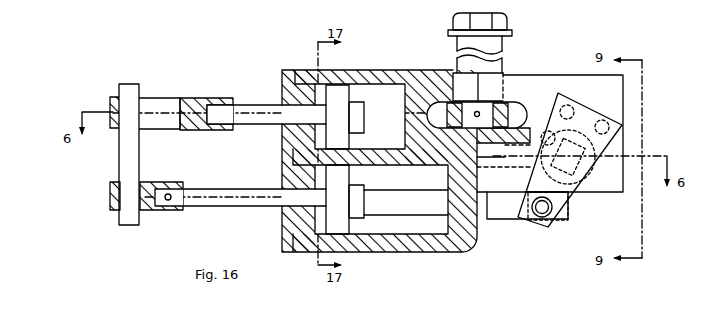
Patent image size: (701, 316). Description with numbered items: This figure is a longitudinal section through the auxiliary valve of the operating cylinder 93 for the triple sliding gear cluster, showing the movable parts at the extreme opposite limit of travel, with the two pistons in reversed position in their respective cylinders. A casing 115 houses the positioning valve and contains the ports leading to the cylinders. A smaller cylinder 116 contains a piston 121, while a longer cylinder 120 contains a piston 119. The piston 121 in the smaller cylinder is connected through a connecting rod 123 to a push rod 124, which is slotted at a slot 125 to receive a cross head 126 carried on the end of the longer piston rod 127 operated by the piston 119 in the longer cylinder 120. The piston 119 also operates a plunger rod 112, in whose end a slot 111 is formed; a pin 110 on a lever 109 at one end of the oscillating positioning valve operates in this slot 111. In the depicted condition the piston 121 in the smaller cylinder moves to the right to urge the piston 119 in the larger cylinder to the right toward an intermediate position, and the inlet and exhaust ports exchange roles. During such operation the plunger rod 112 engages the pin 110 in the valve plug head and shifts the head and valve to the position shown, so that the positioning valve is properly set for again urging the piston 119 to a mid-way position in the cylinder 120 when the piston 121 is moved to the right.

The operating cylinder 93 is at (418, 80).
The lever 109 is at (548, 230).
The pin 110 is at (540, 208).
The slot 111 is at (508, 207).
The plunger rod 112 is at (415, 208).
The casing 115 is at (456, 252).
The cylinder 116 is at (380, 105).
The piston 119 is at (342, 183).
The longer cylinder 120 is at (378, 230).
The piston 121 is at (343, 97).
The connecting rod 123 is at (248, 106).
The push rod 124 is at (193, 102).
The slot 125 is at (158, 99).
The cross head 126 is at (134, 174).
The longer piston rod 127 is at (227, 194).